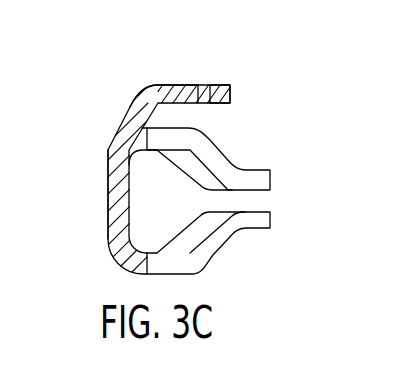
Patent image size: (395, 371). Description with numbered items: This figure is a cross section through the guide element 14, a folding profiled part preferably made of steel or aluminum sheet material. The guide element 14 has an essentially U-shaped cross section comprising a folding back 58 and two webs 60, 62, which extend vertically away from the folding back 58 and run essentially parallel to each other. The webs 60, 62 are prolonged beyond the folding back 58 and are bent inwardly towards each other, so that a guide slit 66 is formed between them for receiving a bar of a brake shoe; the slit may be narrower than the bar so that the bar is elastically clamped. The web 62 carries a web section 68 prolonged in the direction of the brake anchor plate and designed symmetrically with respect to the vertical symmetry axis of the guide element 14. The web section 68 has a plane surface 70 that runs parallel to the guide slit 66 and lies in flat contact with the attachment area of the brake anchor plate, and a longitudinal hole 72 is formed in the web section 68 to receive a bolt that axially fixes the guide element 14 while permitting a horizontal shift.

The guide element 14 is at (106, 120).
The folding back 58 is at (120, 195).
The web 60 is at (203, 262).
The web 62 is at (204, 144).
The guide slit 66 is at (258, 201).
The web section 68 is at (153, 85).
The plane surface 70 is at (227, 85).
The longitudinal hole 72 is at (208, 95).